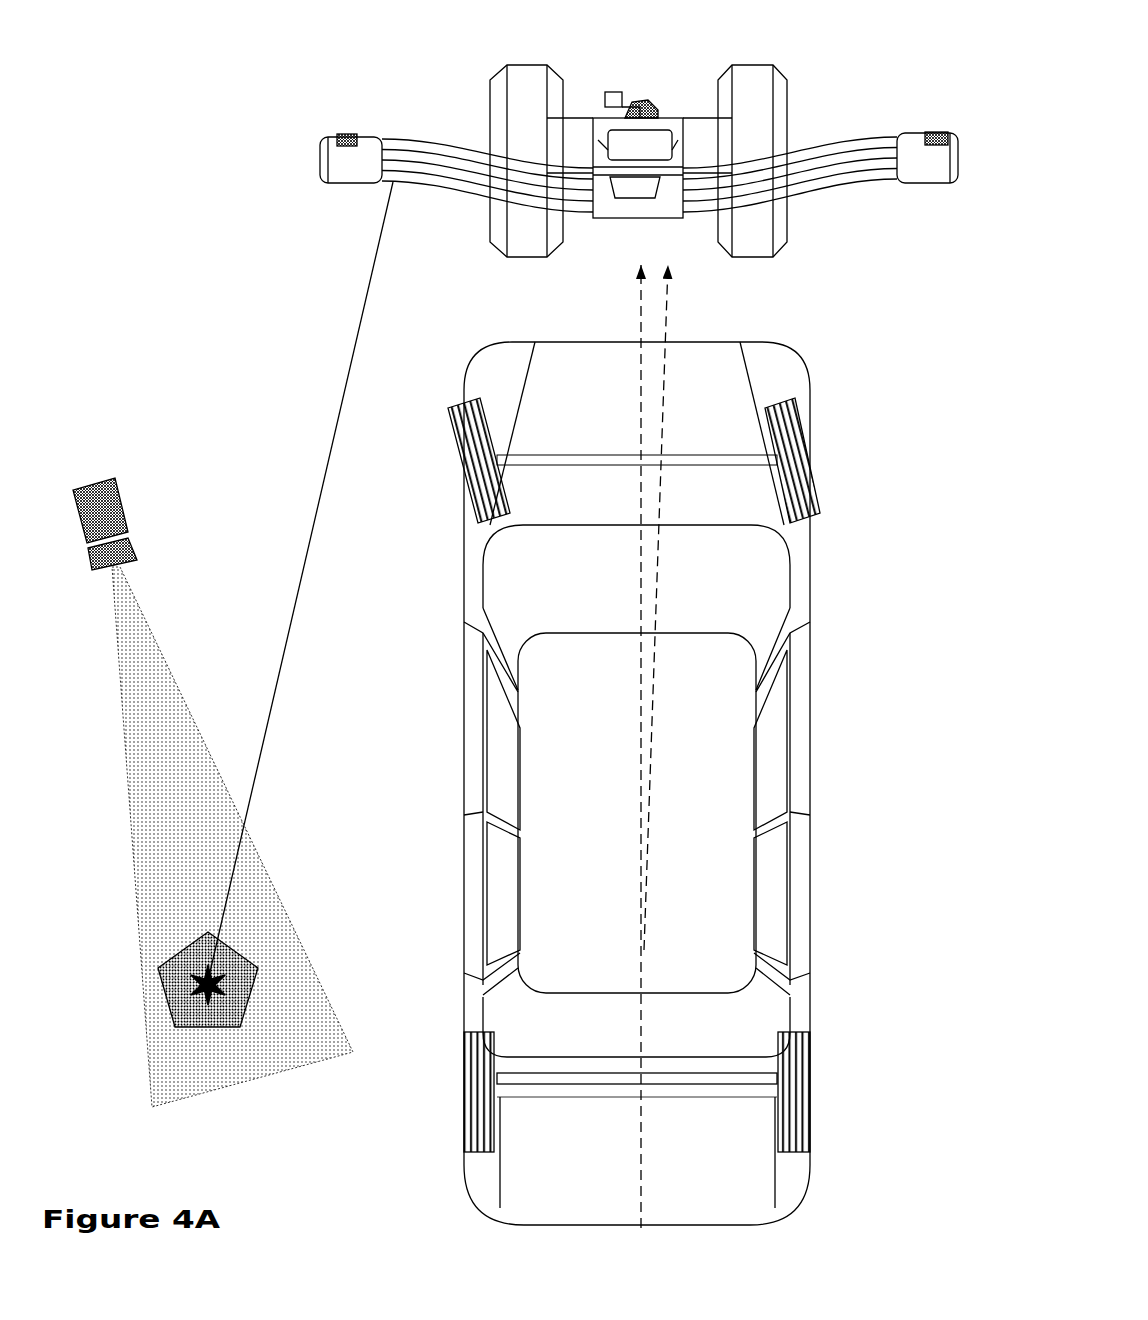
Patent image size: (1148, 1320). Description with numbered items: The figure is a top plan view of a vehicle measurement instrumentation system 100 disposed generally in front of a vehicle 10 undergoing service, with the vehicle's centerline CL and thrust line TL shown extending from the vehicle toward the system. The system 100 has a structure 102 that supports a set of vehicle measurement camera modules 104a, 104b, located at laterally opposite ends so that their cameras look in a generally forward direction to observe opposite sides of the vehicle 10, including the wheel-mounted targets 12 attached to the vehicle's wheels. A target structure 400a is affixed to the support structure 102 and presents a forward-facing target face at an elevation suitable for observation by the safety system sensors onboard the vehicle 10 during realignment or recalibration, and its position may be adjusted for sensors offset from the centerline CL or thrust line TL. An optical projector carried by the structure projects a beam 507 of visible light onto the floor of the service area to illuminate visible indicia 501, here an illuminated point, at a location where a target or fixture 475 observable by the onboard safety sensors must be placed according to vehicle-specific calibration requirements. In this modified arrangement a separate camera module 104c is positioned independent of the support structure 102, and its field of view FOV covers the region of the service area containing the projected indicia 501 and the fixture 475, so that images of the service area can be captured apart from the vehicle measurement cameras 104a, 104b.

The vehicle 10 is at (835, 914).
The wheel-mounted targets 12 is at (445, 477).
The vehicle measurement instrumentation system 100 is at (425, 93).
The structure 102 is at (658, 115).
The vehicle measurement camera module 104a is at (925, 155).
The vehicle measurement camera module 104b is at (353, 153).
The separate camera module 104c is at (132, 505).
The target structure 400a is at (657, 218).
The targets or fixtures 475 is at (252, 1002).
The visible indicia 501 is at (193, 1003).
The beams of visible light 507 is at (345, 395).
The vehicle centerline CL is at (634, 666).
The thrust line TL is at (660, 707).
The field of view FOV is at (287, 907).